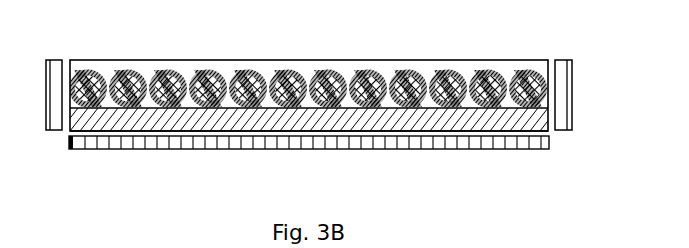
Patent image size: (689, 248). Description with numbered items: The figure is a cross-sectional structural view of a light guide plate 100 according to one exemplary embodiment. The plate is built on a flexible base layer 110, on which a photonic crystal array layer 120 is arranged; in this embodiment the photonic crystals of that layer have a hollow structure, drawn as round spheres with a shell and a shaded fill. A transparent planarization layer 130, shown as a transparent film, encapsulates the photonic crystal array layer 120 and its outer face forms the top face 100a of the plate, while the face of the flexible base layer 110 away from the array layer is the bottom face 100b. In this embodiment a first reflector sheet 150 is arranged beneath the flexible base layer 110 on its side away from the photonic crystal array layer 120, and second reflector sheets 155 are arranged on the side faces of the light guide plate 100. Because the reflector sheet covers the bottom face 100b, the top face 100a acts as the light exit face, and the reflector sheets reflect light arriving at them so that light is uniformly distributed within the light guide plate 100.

The light guide plate 100 is at (303, 97).
The top face 100a is at (309, 70).
The bottom face 100b is at (309, 160).
The flexible base layer 110 is at (309, 149).
The photonic crystal array layer 120 is at (291, 100).
The transparent planarization layer 130 is at (289, 58).
The first reflector sheet 150 is at (309, 161).
The second reflector sheets 155 is at (309, 117).